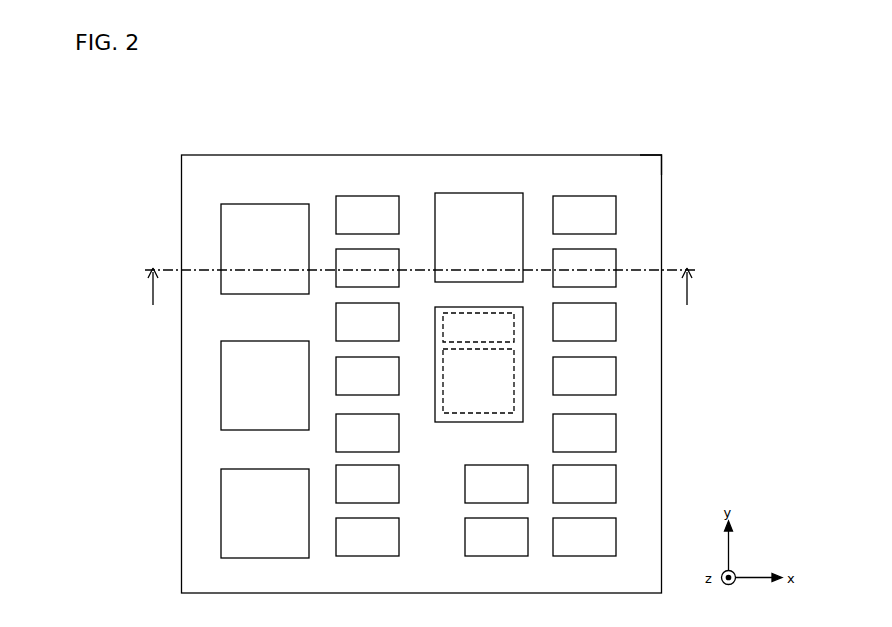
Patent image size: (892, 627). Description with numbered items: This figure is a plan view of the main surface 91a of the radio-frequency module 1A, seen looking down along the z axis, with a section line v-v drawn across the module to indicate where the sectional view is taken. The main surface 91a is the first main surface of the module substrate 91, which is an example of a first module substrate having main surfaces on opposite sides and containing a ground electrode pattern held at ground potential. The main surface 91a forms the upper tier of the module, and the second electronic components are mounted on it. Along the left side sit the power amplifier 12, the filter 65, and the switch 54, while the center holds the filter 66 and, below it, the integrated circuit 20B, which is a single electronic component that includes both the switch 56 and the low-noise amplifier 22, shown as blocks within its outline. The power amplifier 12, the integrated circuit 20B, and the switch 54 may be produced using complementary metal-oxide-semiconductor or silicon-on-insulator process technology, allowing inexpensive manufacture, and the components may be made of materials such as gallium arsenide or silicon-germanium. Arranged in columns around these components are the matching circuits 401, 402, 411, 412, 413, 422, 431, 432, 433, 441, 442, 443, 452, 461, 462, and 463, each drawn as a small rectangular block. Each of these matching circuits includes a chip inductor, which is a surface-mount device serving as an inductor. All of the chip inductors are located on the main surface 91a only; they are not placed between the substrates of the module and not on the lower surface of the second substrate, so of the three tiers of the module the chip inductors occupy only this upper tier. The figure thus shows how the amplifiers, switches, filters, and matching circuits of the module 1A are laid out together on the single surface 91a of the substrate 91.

The radio-frequency module 1A is at (705, 129).
The module substrate 91 is at (494, 155).
The main surface 91a is at (620, 162).
The power amplifier 12 is at (249, 204).
The filter 65 is at (249, 341).
The switch 54 is at (249, 469).
The filter 66 is at (465, 193).
The integrated circuit 20B is at (490, 353).
The switch 56 is at (514, 326).
The low-noise amplifier 22 is at (514, 383).
The matching circuit 412 is at (399, 208).
The matching circuit 413 is at (399, 261).
The matching circuit 442 is at (399, 318).
The matching circuit 443 is at (399, 370).
The matching circuit 422 is at (410, 426).
The matching circuit 452 is at (399, 486).
The matching circuit 402 is at (399, 541).
The matching circuit 401 is at (616, 208).
The matching circuit 411 is at (616, 261).
The matching circuit 441 is at (616, 318).
The matching circuit 431 is at (616, 370).
The matching circuit 461 is at (616, 427).
The matching circuit 432 is at (616, 486).
The matching circuit 433 is at (616, 541).
The matching circuit 462 is at (487, 465).
The matching circuit 463 is at (487, 557).